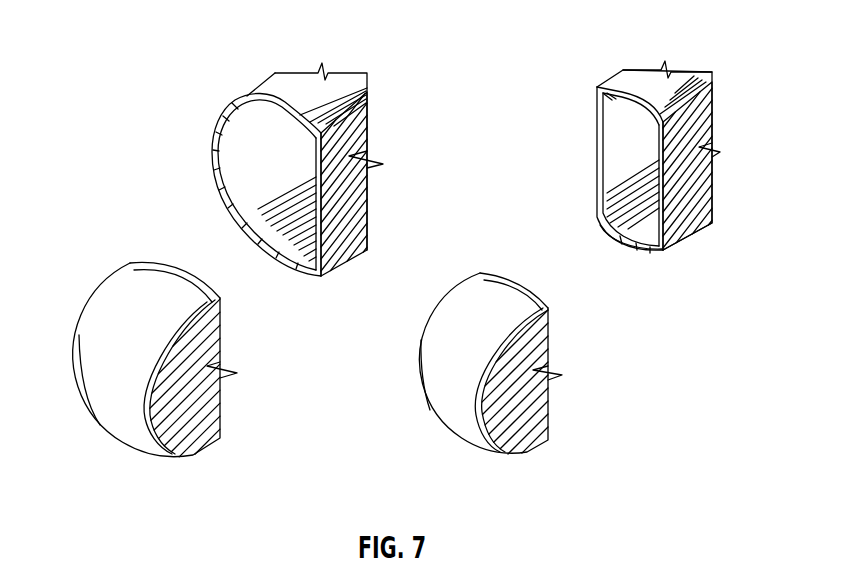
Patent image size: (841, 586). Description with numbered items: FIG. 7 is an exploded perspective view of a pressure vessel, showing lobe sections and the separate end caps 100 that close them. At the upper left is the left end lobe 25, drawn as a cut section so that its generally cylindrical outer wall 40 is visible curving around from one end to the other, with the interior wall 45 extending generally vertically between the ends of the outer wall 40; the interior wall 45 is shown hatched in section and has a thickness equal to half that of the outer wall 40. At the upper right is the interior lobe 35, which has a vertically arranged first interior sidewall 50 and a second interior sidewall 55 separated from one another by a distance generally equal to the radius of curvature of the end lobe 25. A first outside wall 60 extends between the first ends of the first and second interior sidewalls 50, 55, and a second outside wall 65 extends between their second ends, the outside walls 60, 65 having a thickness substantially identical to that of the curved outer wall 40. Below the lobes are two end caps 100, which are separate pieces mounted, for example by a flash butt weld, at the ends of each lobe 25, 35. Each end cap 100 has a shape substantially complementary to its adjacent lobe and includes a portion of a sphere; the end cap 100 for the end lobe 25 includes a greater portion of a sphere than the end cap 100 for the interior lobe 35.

The left end lobe 25 is at (289, 153).
The cylindrical outer wall 40 is at (212, 152).
The interior wall 45 is at (367, 198).
The interior lobe 35 is at (661, 143).
The first interior sidewall 50 is at (597, 131).
The second interior sidewall 55 is at (700, 193).
The first outside wall 60 is at (681, 72).
The second outside wall 65 is at (630, 239).
The end cap 100 is at (105, 327).